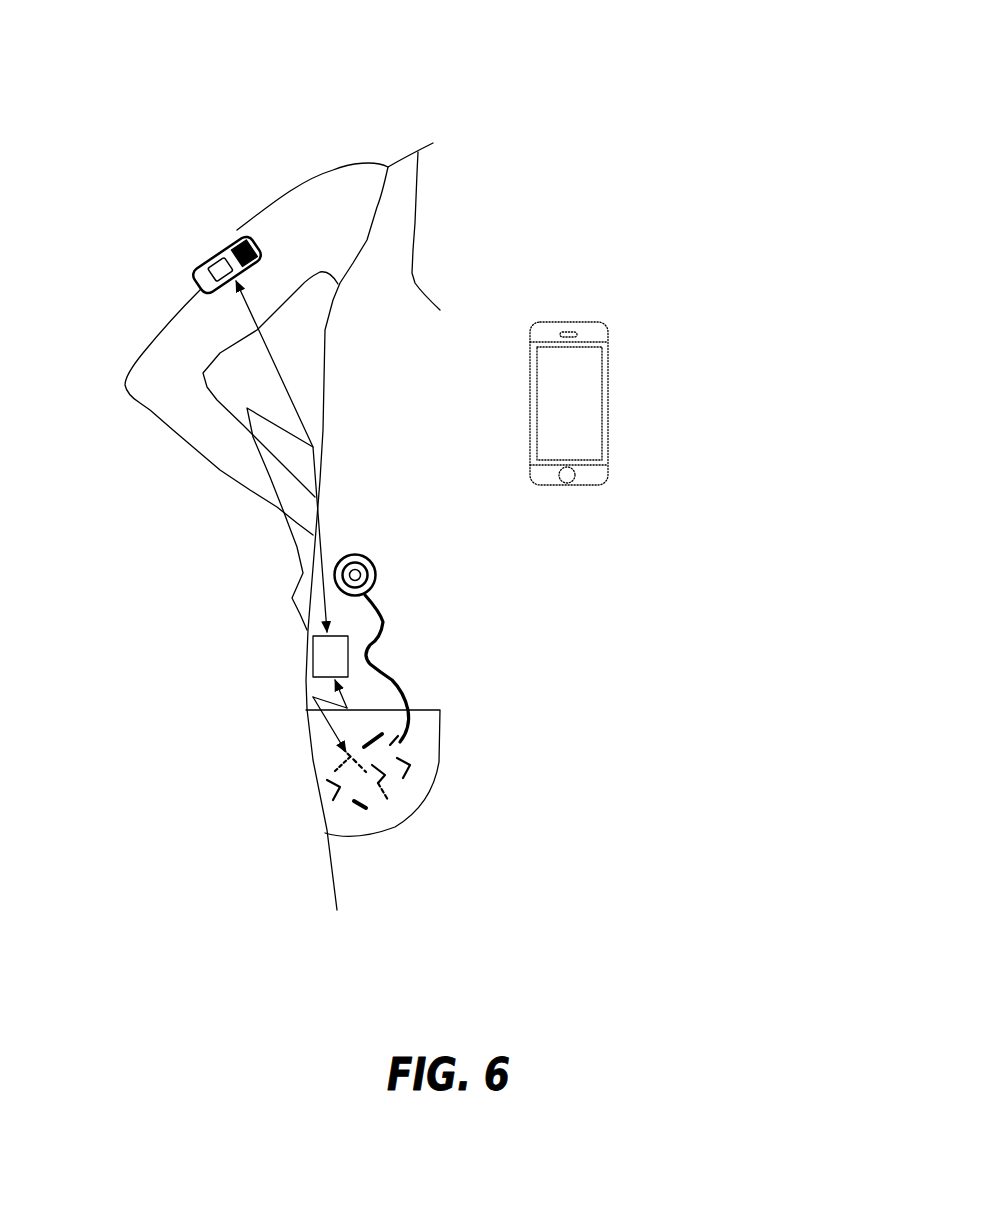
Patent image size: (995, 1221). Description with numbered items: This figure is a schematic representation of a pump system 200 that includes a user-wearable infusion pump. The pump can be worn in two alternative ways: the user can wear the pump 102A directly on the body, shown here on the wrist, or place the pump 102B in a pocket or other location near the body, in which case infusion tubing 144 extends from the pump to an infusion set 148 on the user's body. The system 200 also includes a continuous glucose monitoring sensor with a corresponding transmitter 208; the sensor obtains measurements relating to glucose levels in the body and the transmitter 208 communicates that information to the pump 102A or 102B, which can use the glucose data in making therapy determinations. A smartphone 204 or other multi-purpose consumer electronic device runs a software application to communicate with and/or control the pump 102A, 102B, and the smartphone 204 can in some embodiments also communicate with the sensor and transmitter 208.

The pump system 200 is at (632, 174).
The pump 102A is at (198, 265).
The pump 102B is at (392, 795).
The smartphone 204 is at (607, 408).
The infusion set 148 is at (375, 565).
The infusion tubing 144 is at (395, 674).
The transmitter 208 is at (312, 666).